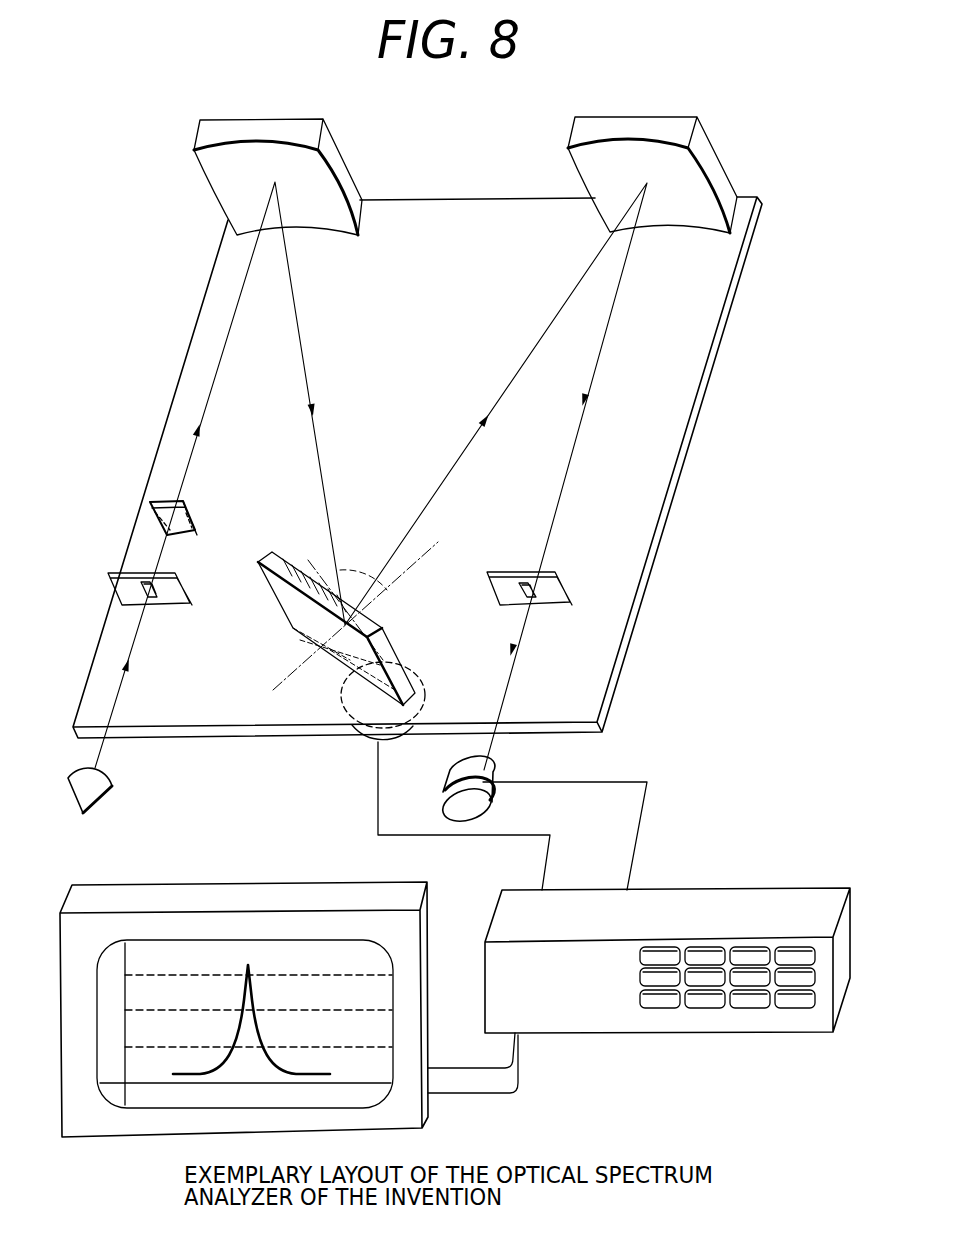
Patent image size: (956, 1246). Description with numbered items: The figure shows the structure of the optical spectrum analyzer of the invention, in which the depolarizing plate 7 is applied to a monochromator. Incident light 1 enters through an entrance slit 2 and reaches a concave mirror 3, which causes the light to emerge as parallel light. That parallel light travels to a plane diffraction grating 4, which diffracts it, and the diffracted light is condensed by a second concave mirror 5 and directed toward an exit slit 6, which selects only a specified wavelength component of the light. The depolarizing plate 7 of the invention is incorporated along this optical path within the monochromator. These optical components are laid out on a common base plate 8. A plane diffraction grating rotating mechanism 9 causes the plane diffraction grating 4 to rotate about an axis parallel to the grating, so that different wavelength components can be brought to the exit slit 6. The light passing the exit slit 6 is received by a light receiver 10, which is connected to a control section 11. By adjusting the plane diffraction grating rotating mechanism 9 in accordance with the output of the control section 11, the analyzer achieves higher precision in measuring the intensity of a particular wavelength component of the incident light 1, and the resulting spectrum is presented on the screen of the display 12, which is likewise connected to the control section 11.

The incident light 1 is at (114, 787).
The entrance slit 2 is at (108, 573).
The concave mirror 3 is at (222, 120).
The plane diffraction grating 4 is at (333, 648).
The concave mirror 5 is at (680, 118).
The exit slit 6 is at (568, 590).
The depolarizing plate 7 is at (150, 505).
The base plate 8 is at (590, 692).
The plane diffraction grating rotating mechanism 9 is at (367, 745).
The light receiver 10 is at (488, 768).
The control section 11 is at (783, 893).
The display 12 is at (222, 890).